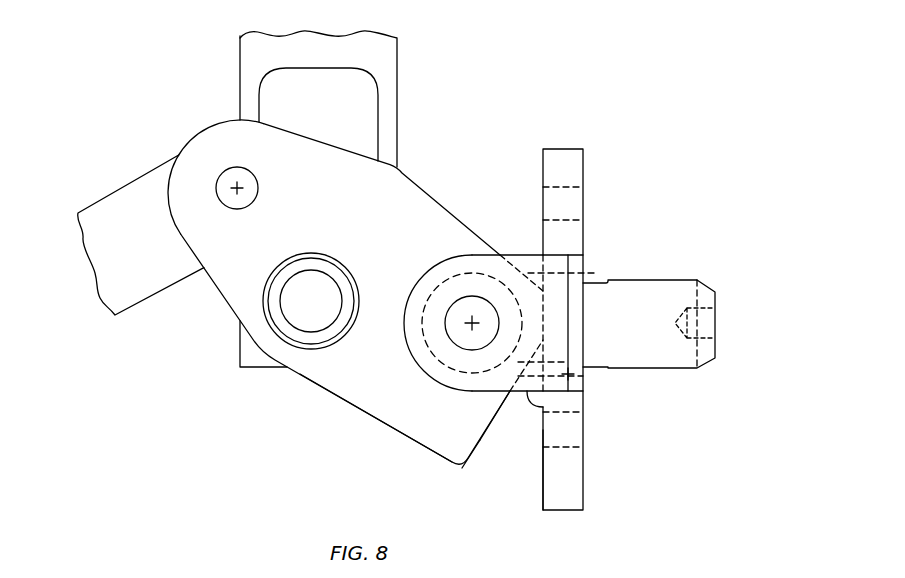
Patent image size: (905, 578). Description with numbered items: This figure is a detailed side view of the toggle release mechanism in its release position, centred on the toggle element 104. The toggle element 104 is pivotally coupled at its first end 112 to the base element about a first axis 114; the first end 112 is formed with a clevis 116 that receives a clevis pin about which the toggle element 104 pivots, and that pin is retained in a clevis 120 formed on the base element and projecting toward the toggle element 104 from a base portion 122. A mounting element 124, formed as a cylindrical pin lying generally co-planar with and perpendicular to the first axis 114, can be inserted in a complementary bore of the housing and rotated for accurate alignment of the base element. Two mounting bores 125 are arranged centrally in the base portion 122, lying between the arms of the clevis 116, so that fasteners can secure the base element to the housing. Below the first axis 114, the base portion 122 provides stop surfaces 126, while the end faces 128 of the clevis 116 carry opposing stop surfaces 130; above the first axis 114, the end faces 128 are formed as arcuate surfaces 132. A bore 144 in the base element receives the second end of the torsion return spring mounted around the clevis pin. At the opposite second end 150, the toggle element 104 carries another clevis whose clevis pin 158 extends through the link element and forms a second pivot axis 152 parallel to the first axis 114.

The toggle element 104 is at (313, 370).
The first end 112 is at (413, 432).
The first axis 114 is at (472, 323).
The clevis 116 is at (148, 290).
The clevis 120 is at (517, 255).
The base portion 122 is at (565, 148).
The mounting element 124 is at (683, 292).
The mounting bores 125 is at (585, 203).
The stop surfaces 126 is at (543, 430).
The end faces 128 is at (480, 447).
The stop surfaces 130 is at (495, 422).
The arcuate surfaces 132 is at (590, 273).
The bore 144 is at (585, 376).
The second end 150 is at (203, 145).
The second pivot axis 152 is at (237, 188).
The clevis pin 158 is at (222, 192).